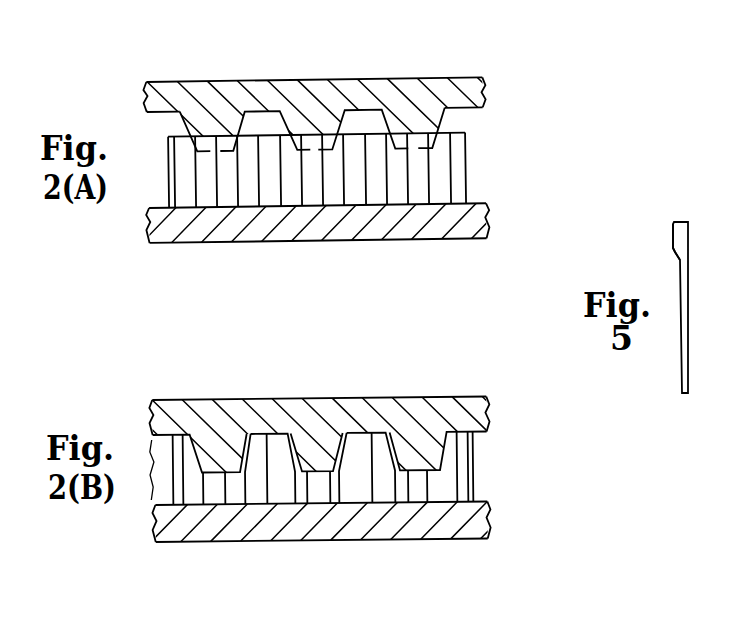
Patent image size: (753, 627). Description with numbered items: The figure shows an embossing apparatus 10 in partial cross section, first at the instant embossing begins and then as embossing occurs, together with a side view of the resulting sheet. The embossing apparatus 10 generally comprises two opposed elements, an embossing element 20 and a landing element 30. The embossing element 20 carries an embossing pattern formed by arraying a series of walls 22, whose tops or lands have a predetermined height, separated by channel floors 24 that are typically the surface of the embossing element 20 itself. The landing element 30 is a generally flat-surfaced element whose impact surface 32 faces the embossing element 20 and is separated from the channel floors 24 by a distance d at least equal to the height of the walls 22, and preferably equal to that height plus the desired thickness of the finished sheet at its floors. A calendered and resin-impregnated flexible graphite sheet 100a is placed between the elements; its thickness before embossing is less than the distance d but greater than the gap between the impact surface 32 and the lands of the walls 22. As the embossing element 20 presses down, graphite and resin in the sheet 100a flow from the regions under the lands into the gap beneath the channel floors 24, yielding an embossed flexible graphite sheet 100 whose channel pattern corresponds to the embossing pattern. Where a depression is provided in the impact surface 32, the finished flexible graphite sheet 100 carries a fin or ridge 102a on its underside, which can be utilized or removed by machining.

In FIG. 2A, the embossing apparatus 10 is at (519, 131).
In FIG. 2B, the embossing apparatus 10 is at (144, 352).
In FIG. 2A, the embossing element 20 is at (316, 78).
In FIG. 2B, the embossing element 20 is at (411, 392).
In FIG. 2B, the walls 22 is at (342, 626).
In FIG. 2A, the channel floors 24 is at (157, 118).
In FIG. 2A, the landing element 30 is at (347, 242).
In FIG. 2B, the landing element 30 is at (400, 547).
In FIG. 2B, the impact surface 32 is at (481, 498).
In FIG. 2B, the flexible graphite sheet 100 is at (474, 453).
In FIG. 5, the flexible graphite sheet 100 is at (682, 218).
In FIG. 2A, the calendered and resin-impregnated flexible graphite sheet 100a is at (466, 172).
In FIG. 5, the fin or ridge 102a is at (673, 232).